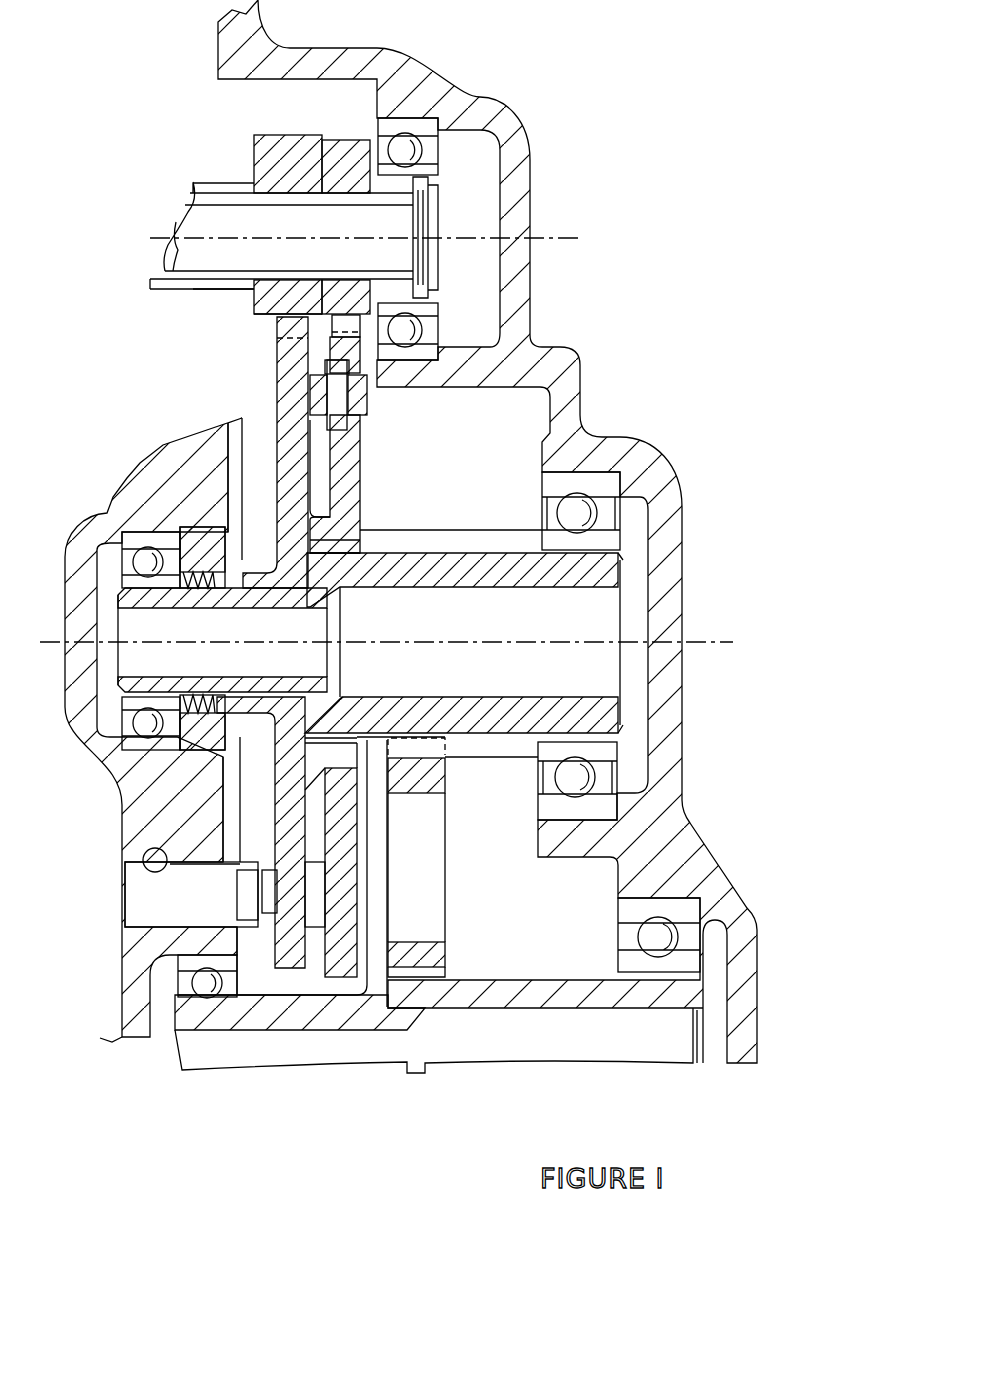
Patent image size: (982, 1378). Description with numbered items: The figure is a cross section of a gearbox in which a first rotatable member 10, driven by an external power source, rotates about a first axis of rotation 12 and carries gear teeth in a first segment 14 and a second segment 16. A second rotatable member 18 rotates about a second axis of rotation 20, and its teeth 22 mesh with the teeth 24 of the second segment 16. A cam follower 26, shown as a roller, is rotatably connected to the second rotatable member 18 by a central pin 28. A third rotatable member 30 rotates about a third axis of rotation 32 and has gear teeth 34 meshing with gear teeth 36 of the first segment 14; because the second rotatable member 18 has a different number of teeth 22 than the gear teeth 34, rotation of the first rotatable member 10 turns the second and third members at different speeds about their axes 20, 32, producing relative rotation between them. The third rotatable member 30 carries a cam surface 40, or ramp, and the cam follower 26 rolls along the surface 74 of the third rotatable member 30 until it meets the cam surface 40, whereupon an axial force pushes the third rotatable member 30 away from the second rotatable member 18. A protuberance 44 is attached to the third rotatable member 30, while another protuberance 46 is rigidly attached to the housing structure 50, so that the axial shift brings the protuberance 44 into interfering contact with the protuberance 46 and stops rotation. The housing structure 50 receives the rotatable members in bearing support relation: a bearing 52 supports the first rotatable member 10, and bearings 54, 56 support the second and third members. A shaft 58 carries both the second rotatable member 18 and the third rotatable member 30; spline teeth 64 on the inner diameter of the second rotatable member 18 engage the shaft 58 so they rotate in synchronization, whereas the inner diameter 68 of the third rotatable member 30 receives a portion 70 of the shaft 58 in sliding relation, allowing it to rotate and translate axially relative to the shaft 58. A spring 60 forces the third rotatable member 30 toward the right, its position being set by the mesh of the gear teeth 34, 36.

The first rotatable member 10 is at (168, 234).
The first axis of rotation 12 is at (562, 240).
The first segment 14 is at (260, 190).
The second segment 16 is at (395, 188).
The second rotatable member 18 is at (347, 507).
The second axis of rotation 20 is at (693, 643).
The teeth 22 is at (345, 323).
The teeth 24 is at (343, 150).
The cam follower 26 is at (370, 400).
The central pin 28 is at (360, 428).
The third rotatable member 30 is at (280, 390).
The third axis of rotation 32 is at (730, 645).
The gear teeth 34 is at (290, 327).
The gear teeth 36 is at (283, 147).
The cam surface 40 is at (320, 930).
The protuberance 44 is at (262, 870).
The protuberance 46 is at (215, 917).
The housing structure 50 is at (560, 362).
The bearing 52 is at (418, 125).
The bearing 54 is at (627, 463).
The bearing 56 is at (130, 528).
The shaft 58 is at (365, 575).
The spring 60 is at (178, 528).
The spline teeth 64 is at (373, 545).
The inner diameter 68 is at (237, 690).
The portion of the shaft 70 is at (280, 585).
The surface 74 is at (313, 458).